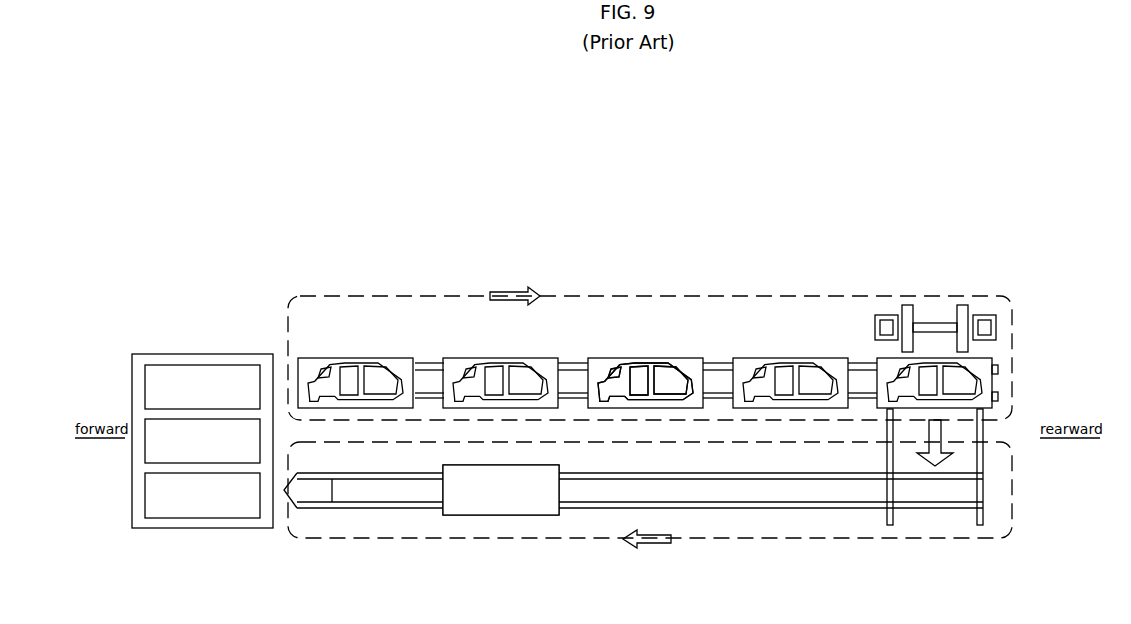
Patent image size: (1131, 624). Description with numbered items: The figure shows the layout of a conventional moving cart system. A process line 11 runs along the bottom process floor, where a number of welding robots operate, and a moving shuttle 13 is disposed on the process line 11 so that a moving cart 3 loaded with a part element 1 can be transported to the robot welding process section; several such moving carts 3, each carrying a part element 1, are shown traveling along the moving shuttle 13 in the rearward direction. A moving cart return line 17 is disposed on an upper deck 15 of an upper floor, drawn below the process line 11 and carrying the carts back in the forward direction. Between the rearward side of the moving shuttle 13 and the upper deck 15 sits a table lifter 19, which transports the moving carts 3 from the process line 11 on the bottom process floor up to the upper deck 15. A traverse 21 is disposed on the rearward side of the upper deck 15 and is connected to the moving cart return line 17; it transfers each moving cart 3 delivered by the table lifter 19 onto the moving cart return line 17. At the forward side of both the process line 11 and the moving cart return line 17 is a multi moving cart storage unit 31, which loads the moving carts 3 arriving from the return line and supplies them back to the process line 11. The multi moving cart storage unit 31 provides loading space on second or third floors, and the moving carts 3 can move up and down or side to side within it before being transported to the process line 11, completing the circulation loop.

The part element 1 is at (610, 366).
The moving cart 3 is at (360, 358).
The process line 11 is at (657, 296).
The moving shuttle 13 is at (428, 362).
The upper deck 15 is at (1012, 488).
The moving cart return line 17 is at (726, 508).
The table lifter 19 is at (965, 312).
The traverse 21 is at (983, 432).
The multi moving cart storage unit 31 is at (184, 338).